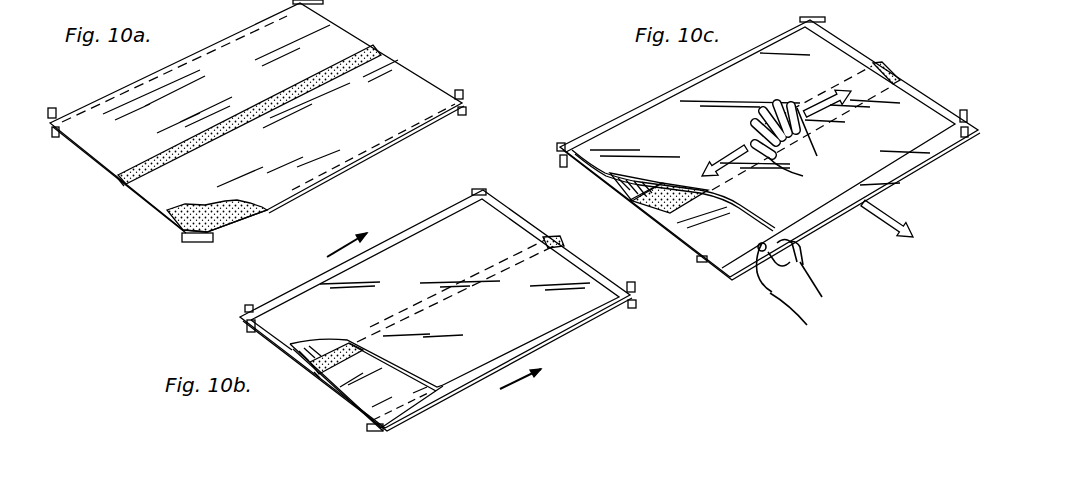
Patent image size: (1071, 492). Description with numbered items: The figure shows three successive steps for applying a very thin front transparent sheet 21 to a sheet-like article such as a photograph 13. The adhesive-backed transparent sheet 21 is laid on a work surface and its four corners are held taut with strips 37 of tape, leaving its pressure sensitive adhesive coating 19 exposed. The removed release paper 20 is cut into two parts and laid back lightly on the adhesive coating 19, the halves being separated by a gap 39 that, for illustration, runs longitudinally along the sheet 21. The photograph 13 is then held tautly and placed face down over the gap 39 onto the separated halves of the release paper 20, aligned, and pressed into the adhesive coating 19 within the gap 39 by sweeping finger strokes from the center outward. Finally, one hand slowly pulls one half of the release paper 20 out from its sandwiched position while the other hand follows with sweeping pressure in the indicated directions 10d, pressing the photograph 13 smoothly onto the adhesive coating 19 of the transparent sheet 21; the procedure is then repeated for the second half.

In FIG. 10B, the photograph 13 is at (552, 316).
In FIG. 10C, the photograph 13 is at (912, 104).
In FIG. 10A, the pressure sensitive adhesive coating 19 is at (379, 48).
In FIG. 10B, the pressure sensitive adhesive coating 19 is at (562, 243).
In FIG. 10C, the pressure sensitive adhesive coating 19 is at (667, 184).
In FIG. 10A, the release paper 20 is at (247, 47).
In FIG. 10B, the release paper 20 is at (508, 212).
In FIG. 10C, the release paper 20 is at (924, 157).
In FIG. 10A, the front transparent sheet 21 is at (176, 229).
In FIG. 10B, the front transparent sheet 21 is at (358, 408).
In FIG. 10C, the front transparent sheet 21 is at (670, 252).
In FIG. 10A, the strips of tape 37 is at (55, 108).
In FIG. 10B, the strips of tape 37 is at (630, 308).
In FIG. 10C, the strips of tape 37 is at (825, 19).
In FIG. 10A, the gap 39 is at (118, 178).
In FIG. 10B, the gap 39 is at (315, 373).
In FIG. 10B, the direction of insertion 10d is at (436, 316).